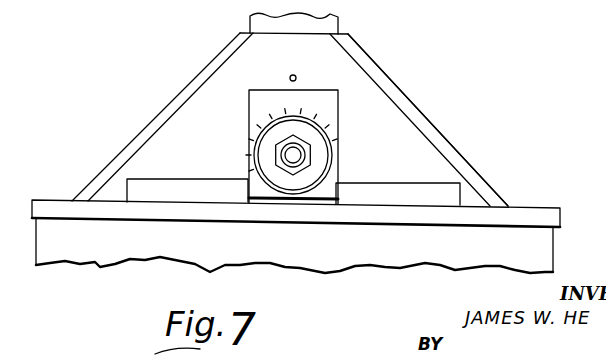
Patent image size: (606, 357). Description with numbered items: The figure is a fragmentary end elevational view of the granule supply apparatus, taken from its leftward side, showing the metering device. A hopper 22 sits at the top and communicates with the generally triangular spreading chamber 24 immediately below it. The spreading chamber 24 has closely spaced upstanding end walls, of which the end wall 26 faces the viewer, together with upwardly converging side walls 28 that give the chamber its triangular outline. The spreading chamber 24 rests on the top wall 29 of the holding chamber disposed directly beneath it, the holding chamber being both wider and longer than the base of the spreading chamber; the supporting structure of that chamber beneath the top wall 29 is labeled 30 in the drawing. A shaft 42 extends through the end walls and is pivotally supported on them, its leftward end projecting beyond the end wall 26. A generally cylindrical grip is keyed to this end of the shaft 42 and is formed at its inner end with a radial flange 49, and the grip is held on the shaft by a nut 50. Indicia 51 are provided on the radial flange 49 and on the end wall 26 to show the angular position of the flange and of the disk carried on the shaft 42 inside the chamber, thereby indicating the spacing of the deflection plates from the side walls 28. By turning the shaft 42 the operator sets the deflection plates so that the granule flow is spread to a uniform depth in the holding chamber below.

The hopper 22 is at (336, 27).
The spreading chamber 24 is at (392, 57).
The end wall 26 is at (425, 152).
The side walls 28 is at (398, 95).
The top wall 29 is at (533, 217).
The base 30 is at (568, 237).
The shaft 42 is at (284, 156).
The radial flange 49 is at (320, 147).
The nut 50 is at (308, 162).
The indicia 51 is at (337, 107).